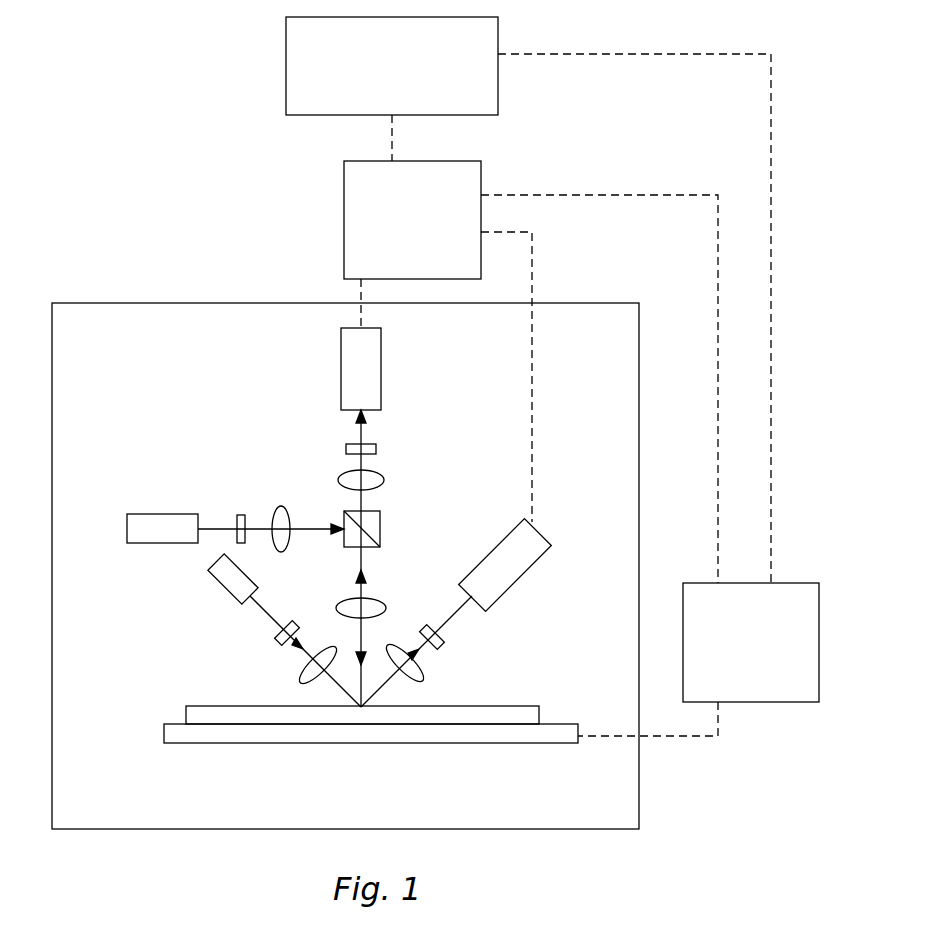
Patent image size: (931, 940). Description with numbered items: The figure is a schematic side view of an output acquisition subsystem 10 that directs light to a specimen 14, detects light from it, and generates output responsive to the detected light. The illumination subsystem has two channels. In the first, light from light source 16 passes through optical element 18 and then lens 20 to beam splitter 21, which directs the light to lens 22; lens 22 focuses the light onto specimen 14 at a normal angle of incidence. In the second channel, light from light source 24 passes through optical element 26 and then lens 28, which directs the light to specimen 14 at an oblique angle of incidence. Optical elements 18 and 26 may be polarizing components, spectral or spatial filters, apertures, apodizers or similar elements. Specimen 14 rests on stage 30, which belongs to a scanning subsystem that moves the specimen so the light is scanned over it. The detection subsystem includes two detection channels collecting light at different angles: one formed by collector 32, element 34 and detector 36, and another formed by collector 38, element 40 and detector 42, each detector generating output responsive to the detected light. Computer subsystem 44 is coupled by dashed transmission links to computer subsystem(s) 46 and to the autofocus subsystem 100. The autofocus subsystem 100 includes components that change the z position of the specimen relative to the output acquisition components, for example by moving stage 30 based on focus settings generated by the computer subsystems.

The output acquisition subsystem 10 is at (639, 374).
The specimen 14 is at (186, 706).
The light source 16 is at (127, 517).
The optical element 18 is at (240, 515).
The lens 20 is at (280, 507).
The beam splitter 21 is at (348, 512).
The lens 22 is at (340, 604).
The light source 24 is at (218, 580).
The optical element 26 is at (275, 645).
The lens 28 is at (300, 680).
The stage 30 is at (164, 730).
The collector 32 is at (342, 473).
The element 34 is at (347, 448).
The detector 36 is at (342, 362).
The collector 38 is at (422, 675).
The element 40 is at (445, 645).
The detector 42 is at (520, 580).
The computer subsystem 44 is at (401, 261).
The computer subsystem(s) 46 is at (380, 105).
The autofocus subsystem 100 is at (733, 680).